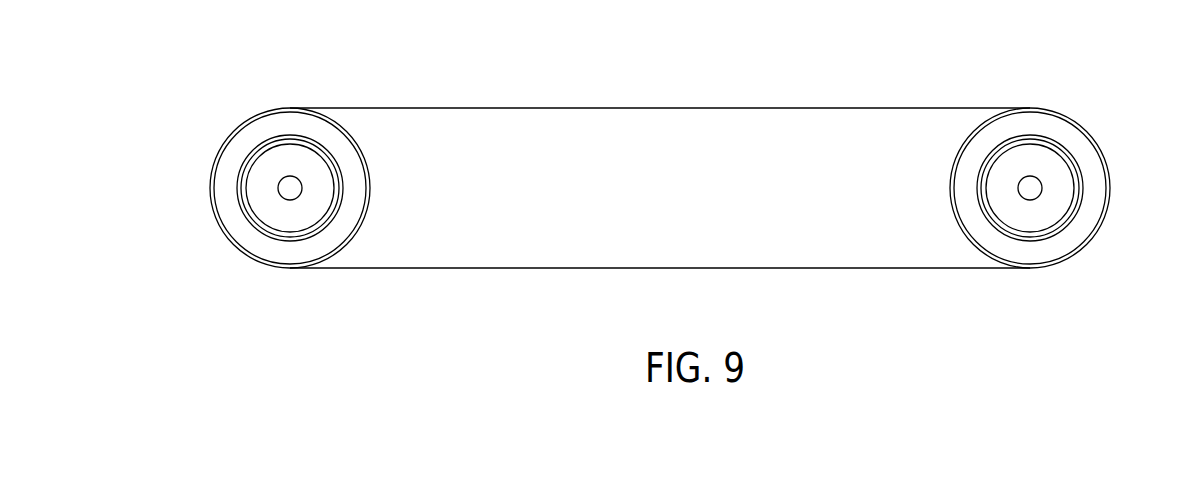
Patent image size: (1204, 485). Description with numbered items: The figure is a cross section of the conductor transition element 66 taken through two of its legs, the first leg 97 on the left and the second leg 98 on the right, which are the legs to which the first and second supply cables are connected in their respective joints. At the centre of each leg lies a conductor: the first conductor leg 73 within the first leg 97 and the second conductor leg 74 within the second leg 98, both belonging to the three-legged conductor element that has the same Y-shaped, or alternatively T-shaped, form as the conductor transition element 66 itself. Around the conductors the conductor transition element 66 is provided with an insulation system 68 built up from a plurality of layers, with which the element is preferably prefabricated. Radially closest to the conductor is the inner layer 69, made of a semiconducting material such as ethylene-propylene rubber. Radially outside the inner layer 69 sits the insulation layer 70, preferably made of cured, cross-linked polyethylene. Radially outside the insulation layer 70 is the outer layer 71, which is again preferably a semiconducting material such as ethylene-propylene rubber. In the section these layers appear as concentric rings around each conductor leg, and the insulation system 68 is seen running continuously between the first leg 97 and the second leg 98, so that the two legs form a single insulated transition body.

The conductor transition element 66 is at (768, 82).
The insulation system 68 is at (540, 268).
The inner layer 69 is at (255, 145).
The insulation layer 70 is at (220, 170).
The outer layer 71 is at (215, 218).
The first conductor leg 73 is at (298, 217).
The second conductor leg 74 is at (1035, 218).
The first leg 97 is at (225, 242).
The second leg 98 is at (1095, 240).